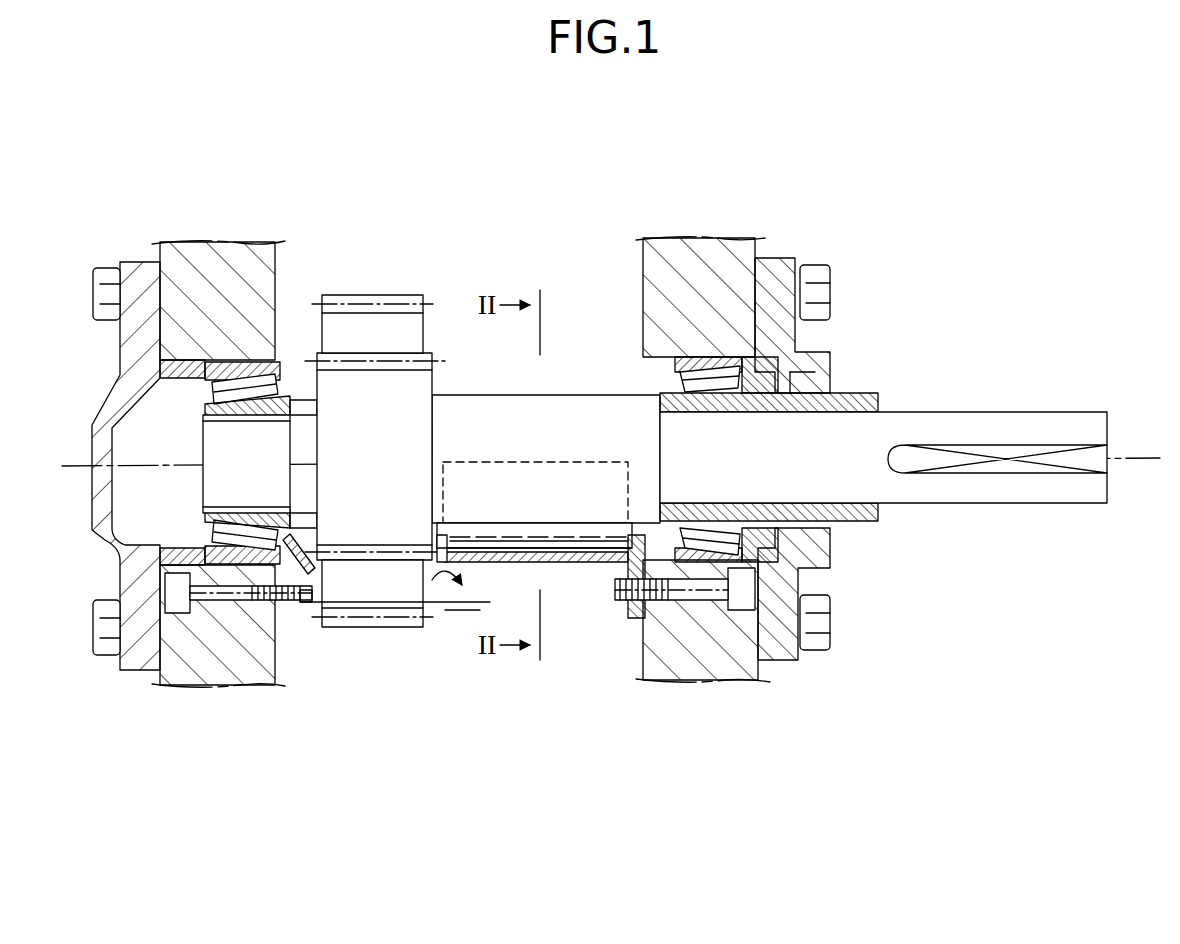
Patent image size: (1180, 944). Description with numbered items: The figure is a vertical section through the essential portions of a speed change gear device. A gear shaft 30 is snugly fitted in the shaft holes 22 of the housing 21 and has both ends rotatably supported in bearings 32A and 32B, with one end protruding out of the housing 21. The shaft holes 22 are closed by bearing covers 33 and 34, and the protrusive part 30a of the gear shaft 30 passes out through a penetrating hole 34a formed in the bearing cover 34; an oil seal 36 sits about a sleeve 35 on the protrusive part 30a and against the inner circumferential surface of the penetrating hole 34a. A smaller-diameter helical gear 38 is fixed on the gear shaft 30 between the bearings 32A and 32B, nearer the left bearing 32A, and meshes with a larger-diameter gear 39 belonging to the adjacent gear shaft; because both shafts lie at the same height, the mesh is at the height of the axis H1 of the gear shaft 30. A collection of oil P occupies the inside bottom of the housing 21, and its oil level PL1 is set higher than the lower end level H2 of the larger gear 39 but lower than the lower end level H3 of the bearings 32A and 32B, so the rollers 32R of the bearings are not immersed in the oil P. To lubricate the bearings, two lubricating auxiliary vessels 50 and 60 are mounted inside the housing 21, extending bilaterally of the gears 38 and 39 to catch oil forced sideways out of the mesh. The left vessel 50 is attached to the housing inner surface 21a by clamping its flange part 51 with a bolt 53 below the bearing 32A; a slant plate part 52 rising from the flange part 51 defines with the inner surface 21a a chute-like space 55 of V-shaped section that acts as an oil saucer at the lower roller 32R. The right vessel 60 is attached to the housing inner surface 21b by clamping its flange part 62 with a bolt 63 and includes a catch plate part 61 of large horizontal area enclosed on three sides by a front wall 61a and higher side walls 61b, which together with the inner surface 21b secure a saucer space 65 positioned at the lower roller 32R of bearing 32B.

The housing 21 is at (190, 245).
The inner surface of housing 21a is at (285, 686).
The inner surface of housing 21b is at (650, 682).
The shaft holes 22 is at (245, 360).
The gear shaft 30 is at (210, 441).
The protrusive part of gear shaft 30a is at (1040, 410).
The bearing 32A is at (286, 372).
The bearing 32B is at (660, 370).
The rollers 32R is at (205, 528).
The bearing cover 33 is at (95, 548).
The bearing cover 34 is at (772, 260).
The penetrating hole 34a is at (830, 376).
The sleeve 35 is at (880, 398).
The oil seal 36 is at (878, 520).
The gear 38 is at (435, 355).
The gear 39 is at (405, 295).
The lubricating auxiliary vessel 50 is at (305, 565).
The flange part 51 is at (282, 582).
The slant plate part 52 is at (348, 605).
The bolt 53 is at (195, 625).
The chute-like space 55 is at (328, 515).
The lubricating auxiliary vessel 60 is at (596, 600).
The catch plate part 61 is at (520, 545).
The front wall 61a is at (440, 557).
The side walls 61b is at (466, 500).
The flange part 62 is at (630, 622).
The bolt 63 is at (716, 612).
The space 65 is at (565, 542).
The axis of gear shaft H1 is at (1153, 462).
The lower end level of larger-diameter gear H2 is at (380, 630).
The lower end level of bearings H3 is at (222, 595).
The collection of oil P is at (465, 620).
The oil level PL1 is at (430, 625).